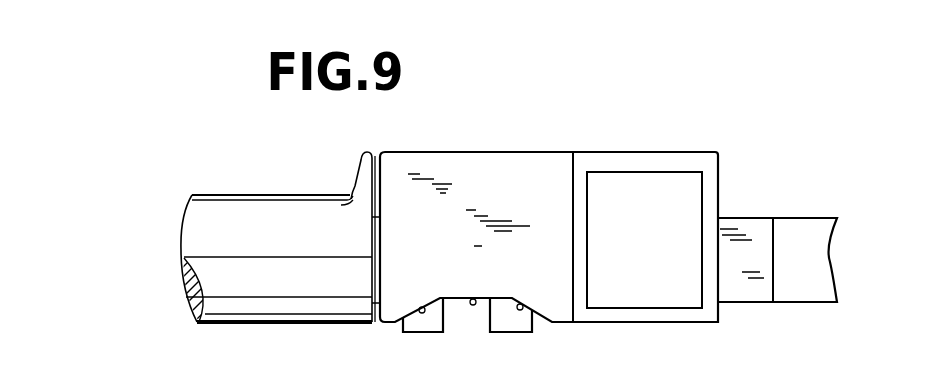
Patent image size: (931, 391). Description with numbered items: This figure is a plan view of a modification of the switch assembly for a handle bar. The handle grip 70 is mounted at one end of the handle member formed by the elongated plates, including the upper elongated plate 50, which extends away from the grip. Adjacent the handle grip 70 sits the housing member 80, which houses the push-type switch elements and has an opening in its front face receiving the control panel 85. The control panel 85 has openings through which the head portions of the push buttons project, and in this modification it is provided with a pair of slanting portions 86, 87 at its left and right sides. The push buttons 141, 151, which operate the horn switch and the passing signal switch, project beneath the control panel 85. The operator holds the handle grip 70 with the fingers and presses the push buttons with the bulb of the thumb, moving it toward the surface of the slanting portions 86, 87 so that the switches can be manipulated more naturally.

The handle grip 70 is at (268, 196).
The upper housing member 80 is at (523, 161).
The upper elongated plate 50 is at (793, 228).
The control panel 85 is at (473, 299).
The slanting portion 86 is at (420, 307).
The slanting portion 87 is at (522, 304).
The push button 141 is at (425, 323).
The push button 151 is at (516, 323).